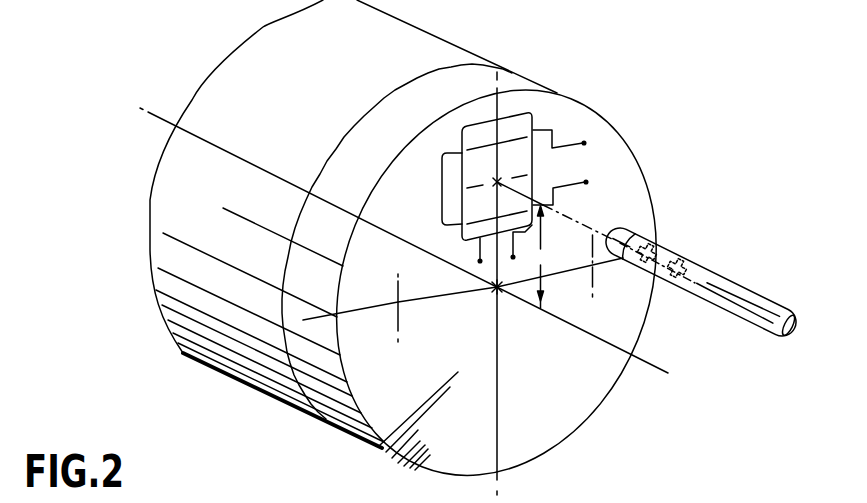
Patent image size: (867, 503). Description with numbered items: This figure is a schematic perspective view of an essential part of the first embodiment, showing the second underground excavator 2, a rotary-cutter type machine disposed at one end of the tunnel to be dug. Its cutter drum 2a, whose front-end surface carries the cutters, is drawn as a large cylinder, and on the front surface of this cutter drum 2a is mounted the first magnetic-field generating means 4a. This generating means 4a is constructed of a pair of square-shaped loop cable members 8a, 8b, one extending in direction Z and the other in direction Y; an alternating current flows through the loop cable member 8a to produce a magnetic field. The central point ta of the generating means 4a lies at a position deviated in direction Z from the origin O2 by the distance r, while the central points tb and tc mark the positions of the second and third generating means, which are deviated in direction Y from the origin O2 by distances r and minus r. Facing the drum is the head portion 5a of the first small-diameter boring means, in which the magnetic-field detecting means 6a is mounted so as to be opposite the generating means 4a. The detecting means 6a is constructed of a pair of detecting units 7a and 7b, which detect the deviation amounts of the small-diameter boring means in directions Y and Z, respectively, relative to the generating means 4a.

The second underground excavator 2 is at (232, 380).
The cutter drum 2a is at (310, 410).
The first magnetic-field generating means 4a is at (541, 123).
The square-shaped loop cable member 8a is at (472, 124).
The square-shaped loop cable member 8b is at (442, 195).
The central point of the first magnetic-field generating means ta is at (498, 181).
The central point of the second magnetic-field generating means tb is at (597, 275).
The central point of the third magnetic-field generating means tc is at (396, 302).
The origin O2 is at (492, 289).
The offset distance r is at (540, 257).
The head portion 5a is at (622, 228).
The magnetic-field detecting means 6a is at (738, 216).
The detecting unit 7a is at (663, 246).
The detecting unit 7b is at (690, 264).